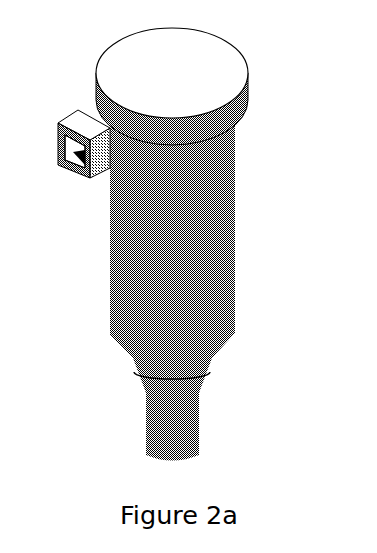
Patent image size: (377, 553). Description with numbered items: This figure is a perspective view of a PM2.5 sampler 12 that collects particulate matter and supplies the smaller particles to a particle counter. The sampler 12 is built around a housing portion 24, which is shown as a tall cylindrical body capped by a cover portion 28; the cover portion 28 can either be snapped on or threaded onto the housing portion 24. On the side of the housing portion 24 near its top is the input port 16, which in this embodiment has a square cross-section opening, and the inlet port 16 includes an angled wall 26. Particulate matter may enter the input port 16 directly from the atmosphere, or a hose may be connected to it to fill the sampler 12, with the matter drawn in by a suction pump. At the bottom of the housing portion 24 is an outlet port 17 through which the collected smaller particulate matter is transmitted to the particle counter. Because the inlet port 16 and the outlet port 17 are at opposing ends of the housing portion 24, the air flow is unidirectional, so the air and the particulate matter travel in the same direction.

The PM2.5 sampler 12 is at (184, 239).
The input port 16 is at (61, 149).
The outlet port 17 is at (198, 423).
The housing portion 24 is at (235, 222).
The angled wall 26 is at (88, 185).
The cover portion 28 is at (237, 52).